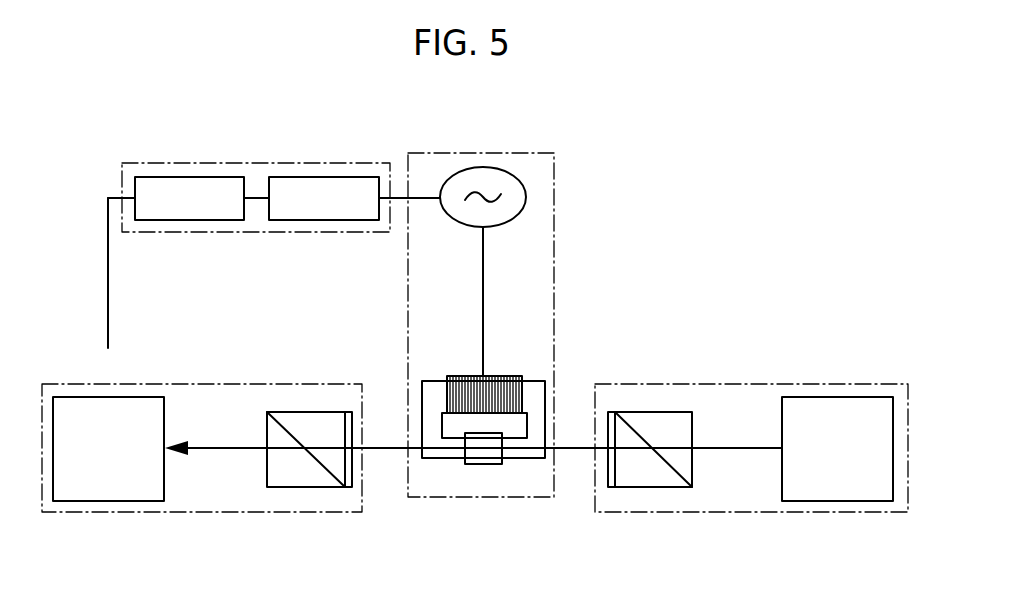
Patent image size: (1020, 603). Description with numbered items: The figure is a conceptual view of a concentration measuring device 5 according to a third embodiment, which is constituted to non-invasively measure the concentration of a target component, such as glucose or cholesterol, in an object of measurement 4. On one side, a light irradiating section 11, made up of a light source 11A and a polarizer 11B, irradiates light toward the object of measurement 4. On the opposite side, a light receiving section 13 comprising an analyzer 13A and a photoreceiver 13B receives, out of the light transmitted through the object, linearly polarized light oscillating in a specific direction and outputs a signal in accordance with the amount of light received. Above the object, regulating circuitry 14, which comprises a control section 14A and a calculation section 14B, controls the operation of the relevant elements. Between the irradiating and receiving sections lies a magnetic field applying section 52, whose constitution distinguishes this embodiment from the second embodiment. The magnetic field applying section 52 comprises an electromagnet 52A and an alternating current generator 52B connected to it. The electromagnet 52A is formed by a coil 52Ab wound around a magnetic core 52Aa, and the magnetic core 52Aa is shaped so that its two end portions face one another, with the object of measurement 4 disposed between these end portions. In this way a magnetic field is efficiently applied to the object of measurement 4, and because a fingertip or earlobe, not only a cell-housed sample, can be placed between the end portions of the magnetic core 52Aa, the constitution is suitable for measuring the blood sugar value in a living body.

The object of measurement 4 is at (495, 465).
The concentration measuring device 5 is at (603, 270).
The light irradiating section 11 is at (765, 378).
The light source 11A is at (843, 397).
The polarizer 11B is at (680, 410).
The light receiving section 13 is at (222, 378).
The analyzer 13A is at (323, 410).
The photoreceiver 13B is at (77, 397).
The regulating circuitry 14 is at (270, 158).
The control section 14A is at (335, 177).
The calculation section 14B is at (200, 177).
The magnetic field applying section 52 is at (565, 324).
The electromagnet 52A is at (489, 377).
The magnetic core 52Aa is at (443, 458).
The coil 52Ab is at (507, 376).
The alternating current generator 52B is at (524, 183).